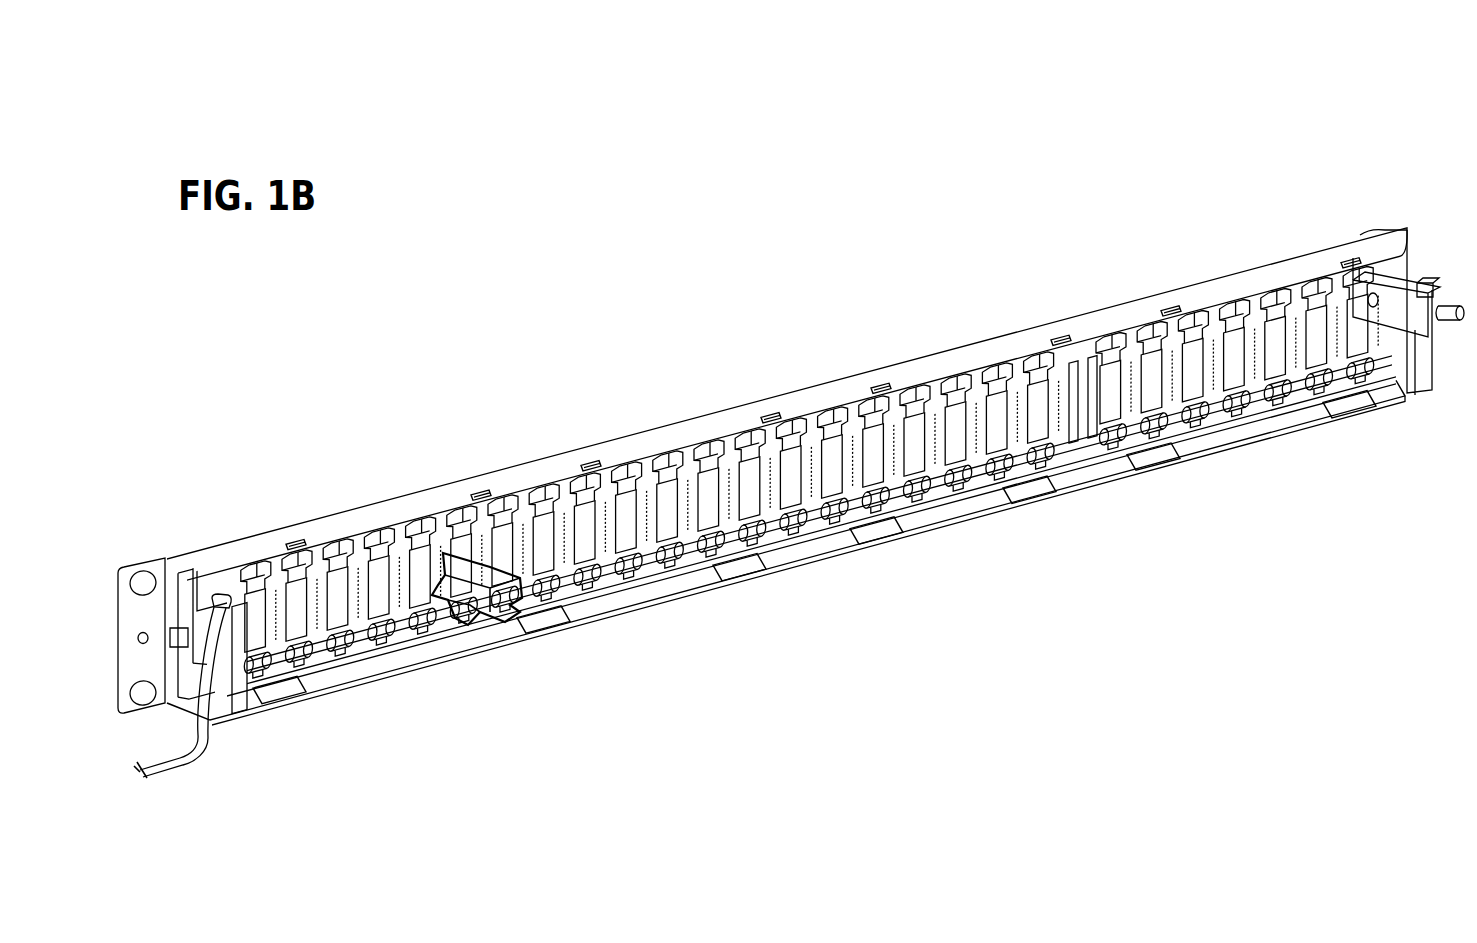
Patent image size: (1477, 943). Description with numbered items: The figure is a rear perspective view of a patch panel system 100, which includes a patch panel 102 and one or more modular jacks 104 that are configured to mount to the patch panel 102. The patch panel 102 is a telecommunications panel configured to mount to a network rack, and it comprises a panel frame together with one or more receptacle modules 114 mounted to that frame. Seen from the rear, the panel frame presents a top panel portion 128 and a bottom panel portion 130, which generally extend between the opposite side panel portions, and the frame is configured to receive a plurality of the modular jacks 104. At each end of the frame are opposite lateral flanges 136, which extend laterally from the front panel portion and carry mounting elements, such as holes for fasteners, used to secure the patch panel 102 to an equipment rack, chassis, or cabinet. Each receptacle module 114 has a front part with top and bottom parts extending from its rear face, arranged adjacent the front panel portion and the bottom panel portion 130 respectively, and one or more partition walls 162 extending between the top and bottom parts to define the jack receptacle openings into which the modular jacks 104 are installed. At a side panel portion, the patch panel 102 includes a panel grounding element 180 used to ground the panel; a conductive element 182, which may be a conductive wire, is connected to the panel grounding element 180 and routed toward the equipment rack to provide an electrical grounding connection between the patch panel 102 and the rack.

The patch panel system 100 is at (1352, 130).
The patch panel 102 is at (1271, 237).
The modular jack 104 is at (450, 603).
The receptacle module 114 is at (895, 453).
The top panel portion 128 is at (1003, 343).
The bottom panel portion 130 is at (1102, 472).
The lateral flange 136 is at (130, 567).
The partition wall 162 is at (957, 432).
The panel grounding element 180 is at (222, 600).
The conductive element 182 is at (192, 745).